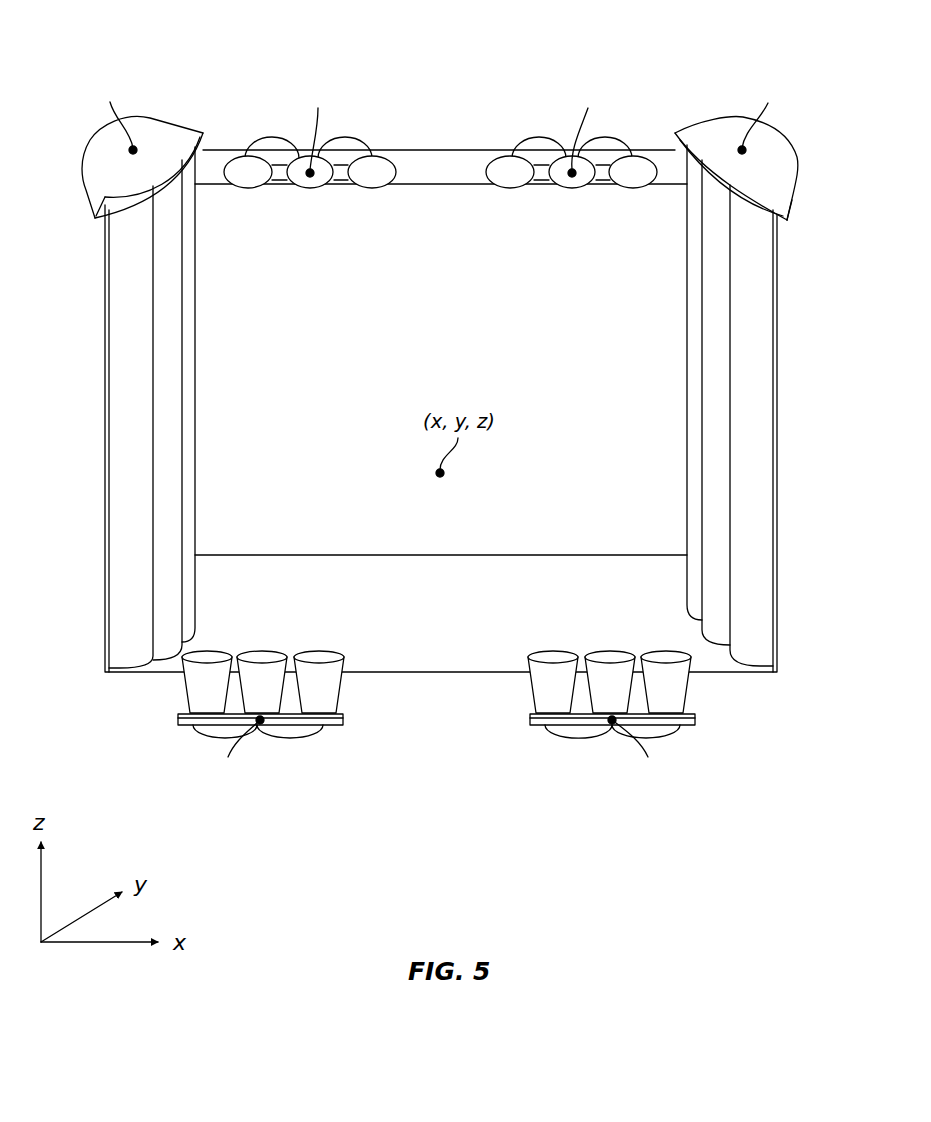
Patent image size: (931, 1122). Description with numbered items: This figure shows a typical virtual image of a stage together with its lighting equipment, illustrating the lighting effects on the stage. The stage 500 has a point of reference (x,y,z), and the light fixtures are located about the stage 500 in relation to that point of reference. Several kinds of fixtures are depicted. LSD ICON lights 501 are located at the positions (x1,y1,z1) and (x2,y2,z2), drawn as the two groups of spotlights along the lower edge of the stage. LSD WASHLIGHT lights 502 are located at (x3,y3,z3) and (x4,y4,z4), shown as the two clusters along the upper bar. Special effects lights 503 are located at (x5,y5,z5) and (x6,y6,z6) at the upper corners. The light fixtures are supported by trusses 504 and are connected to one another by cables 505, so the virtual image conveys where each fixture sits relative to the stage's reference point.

The stage 500 is at (787, 298).
The LSD ICON lights 501 is at (277, 621).
The LSD WASHLIGHT lights 502 is at (298, 209).
The special effects lights 503 is at (95, 195).
The trusses 504 is at (290, 168).
The cables 505 is at (345, 137).